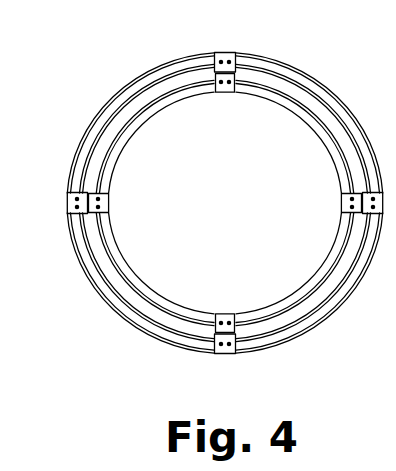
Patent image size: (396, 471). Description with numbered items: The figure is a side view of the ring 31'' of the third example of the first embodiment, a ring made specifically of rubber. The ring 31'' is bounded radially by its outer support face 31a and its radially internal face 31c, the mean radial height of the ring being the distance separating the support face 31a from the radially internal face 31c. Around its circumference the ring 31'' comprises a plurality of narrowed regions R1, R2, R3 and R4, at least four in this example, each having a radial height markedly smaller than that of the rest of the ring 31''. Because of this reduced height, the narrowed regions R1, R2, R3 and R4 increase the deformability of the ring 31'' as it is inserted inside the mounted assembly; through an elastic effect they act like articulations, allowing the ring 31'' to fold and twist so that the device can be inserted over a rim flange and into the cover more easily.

The support face 31a is at (150, 70).
The radially internal face 31c is at (130, 273).
The ring 31'' is at (224, 221).
The narrowed region R1 is at (108, 203).
The narrowed region R2 is at (226, 95).
The narrowed region R3 is at (341, 203).
The narrowed region R4 is at (222, 317).